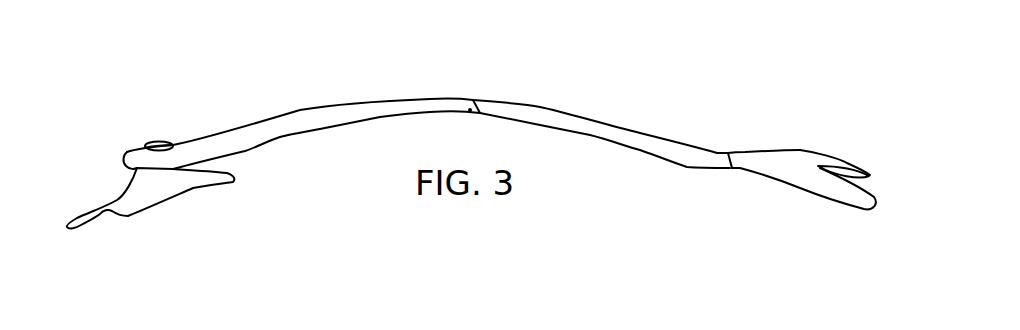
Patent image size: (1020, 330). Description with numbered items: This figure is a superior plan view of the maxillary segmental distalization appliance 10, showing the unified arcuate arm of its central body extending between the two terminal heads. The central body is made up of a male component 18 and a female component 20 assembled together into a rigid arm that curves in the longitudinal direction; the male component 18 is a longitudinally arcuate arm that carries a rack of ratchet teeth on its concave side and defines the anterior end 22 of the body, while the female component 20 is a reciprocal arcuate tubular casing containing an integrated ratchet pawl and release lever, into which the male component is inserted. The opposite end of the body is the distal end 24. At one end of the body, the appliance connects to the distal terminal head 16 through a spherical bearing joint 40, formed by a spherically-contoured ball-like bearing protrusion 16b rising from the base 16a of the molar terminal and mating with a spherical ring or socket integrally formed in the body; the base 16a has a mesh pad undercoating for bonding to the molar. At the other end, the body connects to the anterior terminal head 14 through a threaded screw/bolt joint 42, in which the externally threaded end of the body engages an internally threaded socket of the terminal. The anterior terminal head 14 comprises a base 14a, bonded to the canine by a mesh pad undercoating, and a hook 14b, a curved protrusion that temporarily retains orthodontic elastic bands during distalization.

The segmental distalization appliance 10 is at (842, 120).
The anterior terminal head 14 is at (800, 180).
The base 14a is at (852, 198).
The hook 14b is at (852, 165).
The distal terminal head 16 is at (141, 183).
The base 16a is at (143, 197).
The spherical bearing protrusion 16b is at (158, 142).
The male component 18 is at (327, 113).
The female component 20 is at (592, 125).
The anterior end 22 is at (125, 157).
The distal end 24 is at (735, 157).
The spherical bearing joint 40 is at (171, 128).
The threaded screw/bolt joint 42 is at (726, 136).